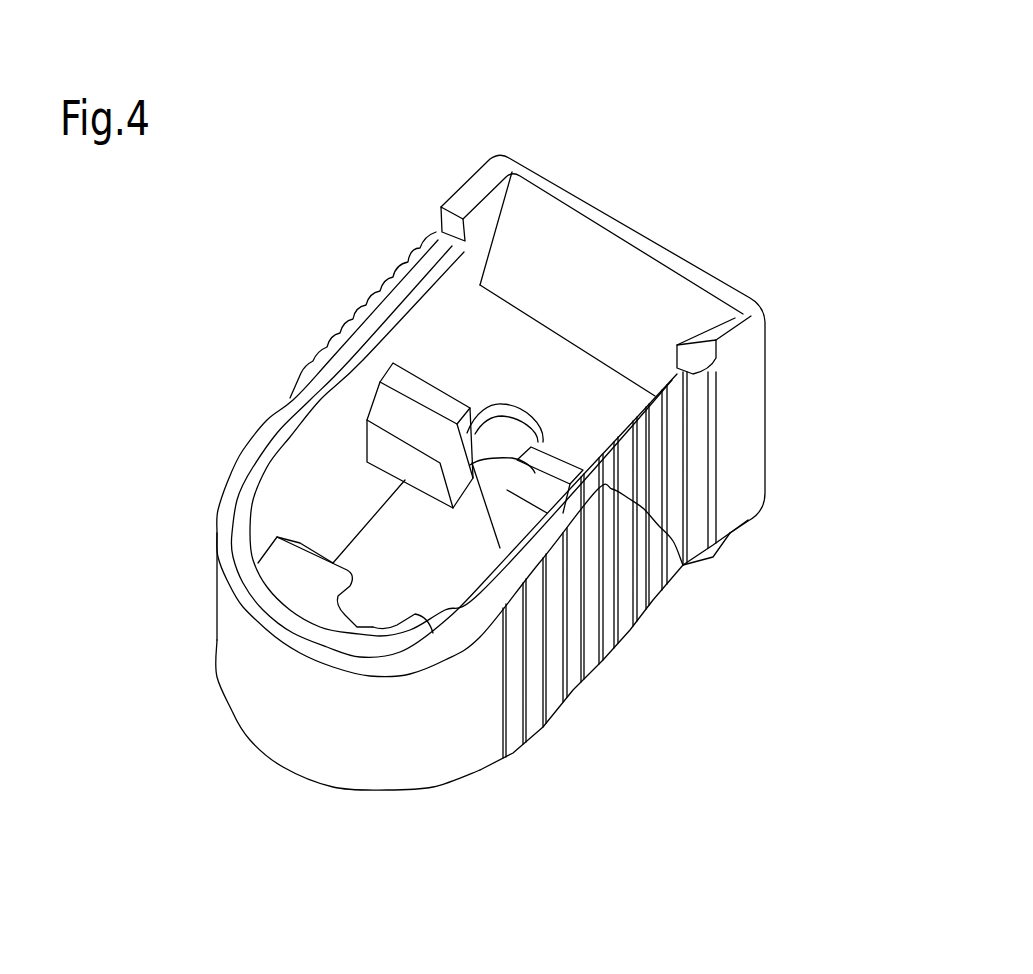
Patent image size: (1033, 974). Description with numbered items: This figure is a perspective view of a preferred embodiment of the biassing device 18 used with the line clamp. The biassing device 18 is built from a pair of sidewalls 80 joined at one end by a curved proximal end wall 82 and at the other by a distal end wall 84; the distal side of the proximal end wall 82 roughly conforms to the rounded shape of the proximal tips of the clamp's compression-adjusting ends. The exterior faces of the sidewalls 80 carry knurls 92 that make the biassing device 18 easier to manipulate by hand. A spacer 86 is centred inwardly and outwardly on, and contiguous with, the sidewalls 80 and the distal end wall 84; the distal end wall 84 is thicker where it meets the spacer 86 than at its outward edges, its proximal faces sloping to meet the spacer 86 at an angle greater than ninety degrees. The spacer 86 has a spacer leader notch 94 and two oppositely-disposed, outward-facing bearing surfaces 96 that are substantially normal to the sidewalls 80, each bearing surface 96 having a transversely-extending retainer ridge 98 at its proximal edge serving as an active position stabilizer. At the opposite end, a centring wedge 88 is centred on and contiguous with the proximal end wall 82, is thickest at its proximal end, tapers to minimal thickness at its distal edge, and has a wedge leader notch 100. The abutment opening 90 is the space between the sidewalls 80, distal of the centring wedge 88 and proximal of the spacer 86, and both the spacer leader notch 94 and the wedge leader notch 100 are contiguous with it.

The biassing device 18 is at (495, 78).
The sidewalls 80 is at (328, 452).
The proximal end wall 82 is at (283, 613).
The distal end wall 84 is at (612, 250).
The spacer 86 is at (508, 327).
The centring wedge 88 is at (320, 583).
The abutment opening 90 is at (420, 560).
The knurls 92 is at (630, 497).
The spacer leader notch 94 is at (502, 432).
The bearing surfaces 96 is at (593, 363).
The retainer ridge 98 is at (545, 615).
The wedge leader notch 100 is at (367, 612).